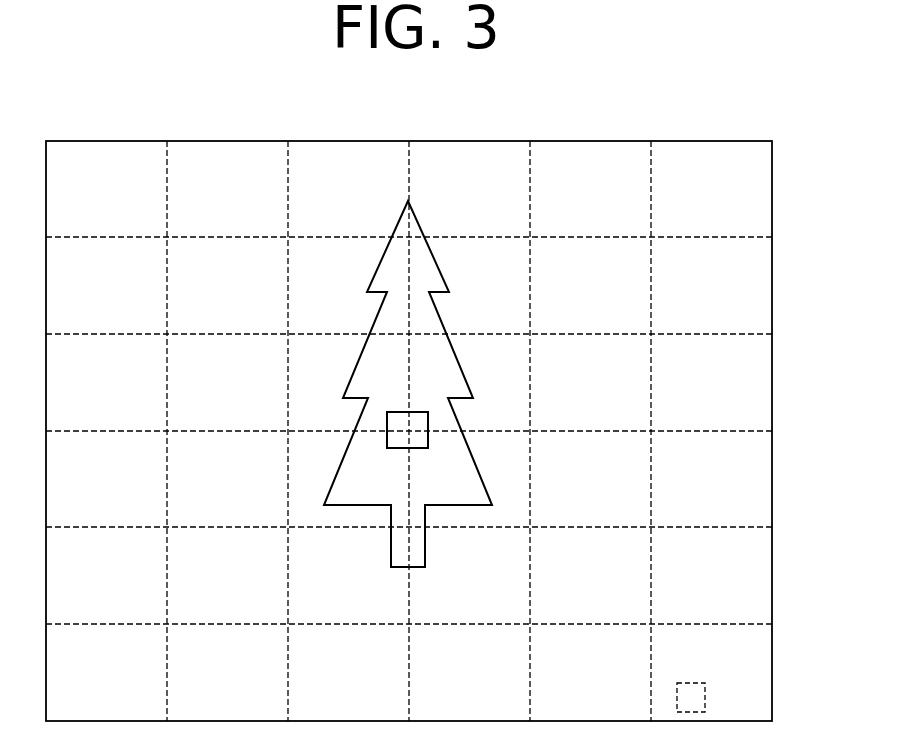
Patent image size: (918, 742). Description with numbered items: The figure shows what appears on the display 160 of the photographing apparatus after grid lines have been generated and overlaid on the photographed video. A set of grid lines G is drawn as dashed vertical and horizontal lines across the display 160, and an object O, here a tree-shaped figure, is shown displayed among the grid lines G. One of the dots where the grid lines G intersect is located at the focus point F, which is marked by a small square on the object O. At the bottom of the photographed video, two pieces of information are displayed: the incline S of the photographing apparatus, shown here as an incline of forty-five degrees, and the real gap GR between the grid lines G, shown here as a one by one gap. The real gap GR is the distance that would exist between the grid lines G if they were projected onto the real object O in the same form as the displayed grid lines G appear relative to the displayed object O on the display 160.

The display unit 160 is at (345, 141).
The object O is at (433, 257).
The grid lines G is at (730, 236).
The focus point F is at (428, 412).
The incline S is at (772, 648).
The real gap GR is at (763, 697).